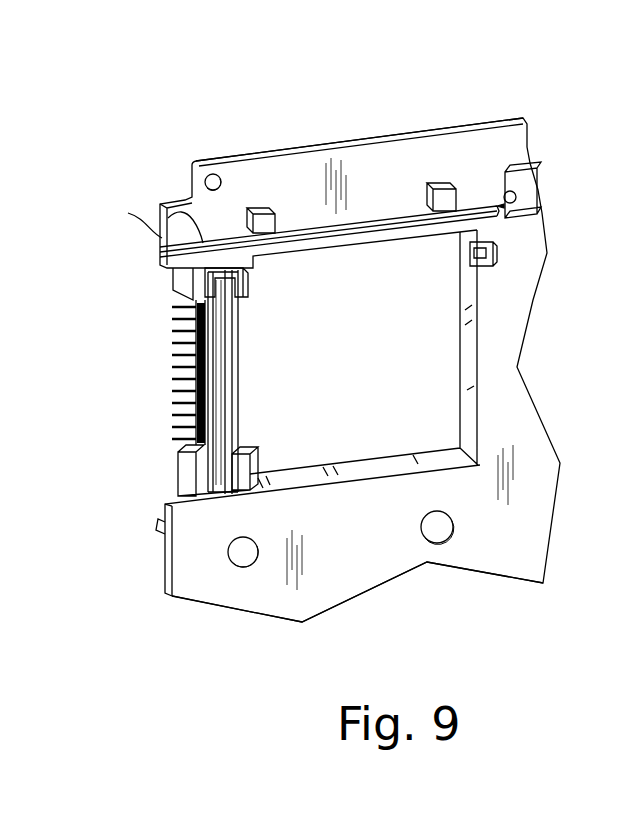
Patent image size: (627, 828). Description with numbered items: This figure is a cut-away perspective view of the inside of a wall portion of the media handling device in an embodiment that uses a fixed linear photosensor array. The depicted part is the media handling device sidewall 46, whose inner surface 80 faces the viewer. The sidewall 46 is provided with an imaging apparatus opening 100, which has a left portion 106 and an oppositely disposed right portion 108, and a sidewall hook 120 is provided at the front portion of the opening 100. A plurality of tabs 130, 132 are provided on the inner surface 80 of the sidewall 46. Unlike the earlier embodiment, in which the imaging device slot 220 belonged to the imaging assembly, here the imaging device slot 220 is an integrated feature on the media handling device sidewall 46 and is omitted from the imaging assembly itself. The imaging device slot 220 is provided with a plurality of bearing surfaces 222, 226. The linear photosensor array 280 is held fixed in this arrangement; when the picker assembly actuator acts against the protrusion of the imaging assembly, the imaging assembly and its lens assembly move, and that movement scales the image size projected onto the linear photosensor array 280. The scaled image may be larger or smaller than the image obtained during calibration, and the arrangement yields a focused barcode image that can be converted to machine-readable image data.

The media handling device sidewall 46 is at (502, 120).
The inner surface 80 is at (380, 541).
The imaging apparatus opening 100 is at (404, 450).
The left portion 106 is at (417, 234).
The right portion 108 is at (273, 481).
The sidewall hook 120 is at (477, 257).
The tab 130 is at (263, 210).
The tab 132 is at (441, 185).
The imaging device slot 220 is at (214, 494).
The bearing surface 222 is at (231, 272).
The bearing surface 226 is at (247, 472).
The linear photosensor array 280 is at (171, 306).